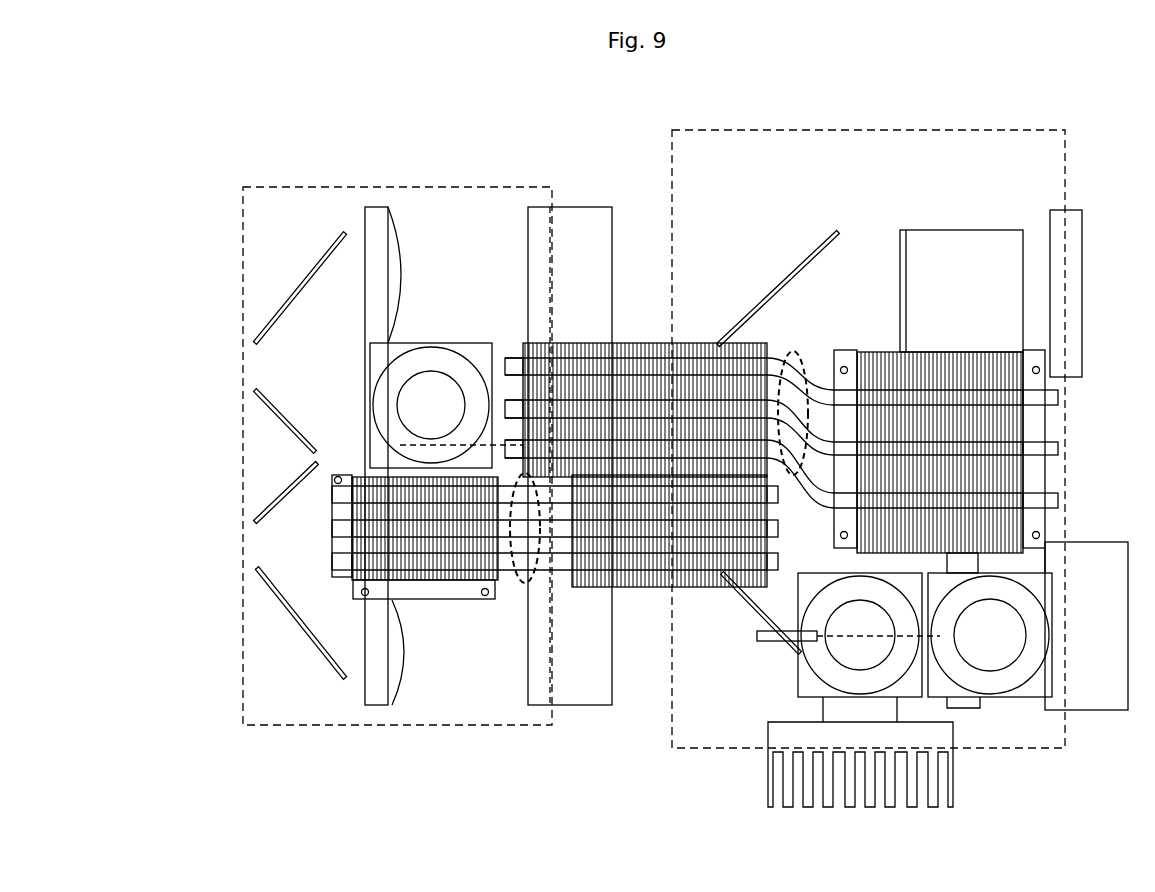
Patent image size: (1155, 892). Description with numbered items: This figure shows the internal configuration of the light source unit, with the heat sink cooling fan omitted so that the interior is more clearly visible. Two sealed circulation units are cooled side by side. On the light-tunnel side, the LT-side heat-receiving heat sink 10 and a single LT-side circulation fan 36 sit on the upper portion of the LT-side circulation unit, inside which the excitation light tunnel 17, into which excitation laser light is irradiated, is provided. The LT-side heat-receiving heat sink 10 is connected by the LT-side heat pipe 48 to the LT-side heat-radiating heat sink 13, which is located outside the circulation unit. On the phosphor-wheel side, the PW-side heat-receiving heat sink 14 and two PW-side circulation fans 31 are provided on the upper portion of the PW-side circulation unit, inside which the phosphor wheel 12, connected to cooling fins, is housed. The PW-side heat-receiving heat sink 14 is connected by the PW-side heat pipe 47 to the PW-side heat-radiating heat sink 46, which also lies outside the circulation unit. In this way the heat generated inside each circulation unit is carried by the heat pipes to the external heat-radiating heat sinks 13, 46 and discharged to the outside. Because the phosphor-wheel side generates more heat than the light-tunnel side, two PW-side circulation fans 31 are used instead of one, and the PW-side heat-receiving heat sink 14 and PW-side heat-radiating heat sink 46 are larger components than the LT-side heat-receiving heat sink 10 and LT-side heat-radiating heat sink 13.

The LT-side heat-receiving heat sink 10 is at (407, 568).
The phosphor wheel 12 is at (770, 642).
The LT-side heat-radiating heat sink 13 is at (658, 560).
The PW-side heat-receiving heat sink 14 is at (940, 370).
The excitation light tunnel 17 is at (403, 447).
The PW-side circulation fan 31 is at (898, 670).
The LT-side circulation fan 36 is at (407, 380).
The PW-side heat-radiating heat sink 46 is at (647, 343).
The PW-side heat pipe 47 is at (797, 352).
The LT-side heat pipe 48 is at (520, 583).